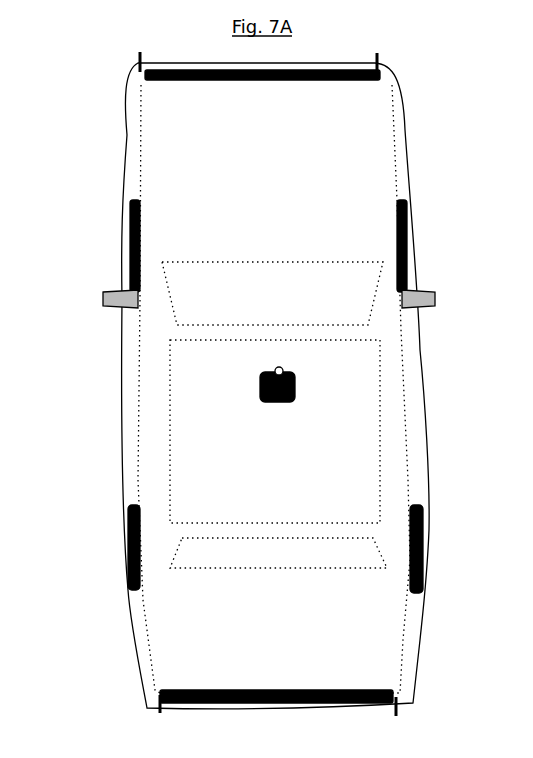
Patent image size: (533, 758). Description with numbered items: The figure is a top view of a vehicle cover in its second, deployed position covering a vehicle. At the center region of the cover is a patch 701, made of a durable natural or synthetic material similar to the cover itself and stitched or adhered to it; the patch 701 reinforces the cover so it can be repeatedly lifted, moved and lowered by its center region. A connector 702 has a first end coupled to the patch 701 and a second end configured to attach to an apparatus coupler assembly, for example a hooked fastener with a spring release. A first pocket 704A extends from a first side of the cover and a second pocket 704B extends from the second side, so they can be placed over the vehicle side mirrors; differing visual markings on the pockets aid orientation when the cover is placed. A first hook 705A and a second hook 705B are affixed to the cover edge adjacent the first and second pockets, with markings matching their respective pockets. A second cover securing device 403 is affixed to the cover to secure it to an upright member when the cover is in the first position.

The second cover securing device 403 is at (100, 533).
The first pocket 704A is at (84, 262).
The second pocket 704B is at (460, 262).
The patch 701 is at (440, 400).
The connector 702 is at (440, 352).
The first hook 705A is at (435, 715).
The second hook 705B is at (120, 720).